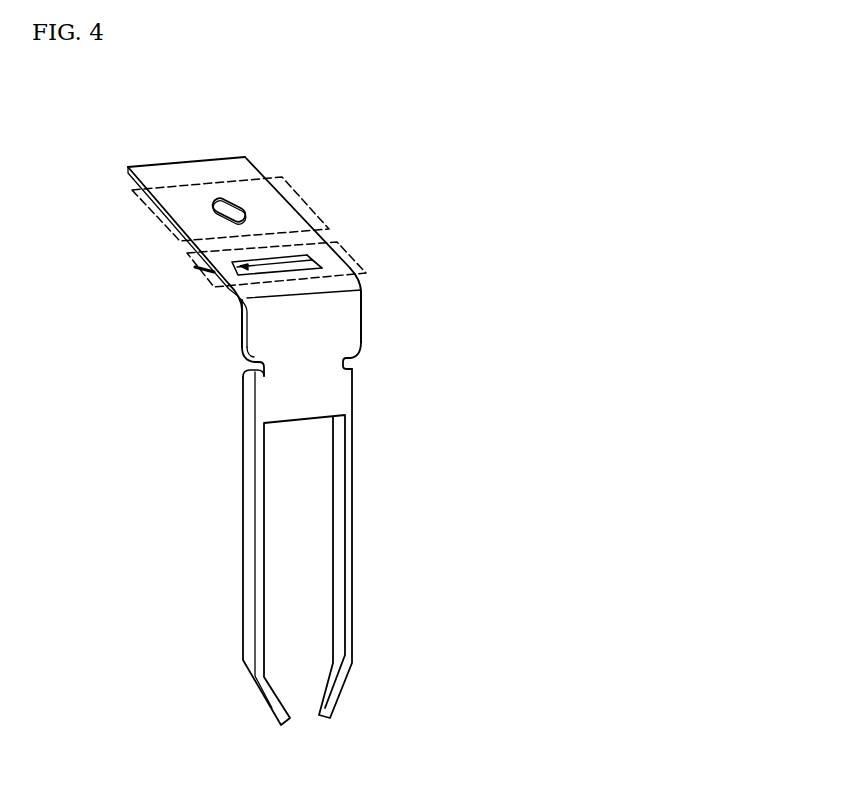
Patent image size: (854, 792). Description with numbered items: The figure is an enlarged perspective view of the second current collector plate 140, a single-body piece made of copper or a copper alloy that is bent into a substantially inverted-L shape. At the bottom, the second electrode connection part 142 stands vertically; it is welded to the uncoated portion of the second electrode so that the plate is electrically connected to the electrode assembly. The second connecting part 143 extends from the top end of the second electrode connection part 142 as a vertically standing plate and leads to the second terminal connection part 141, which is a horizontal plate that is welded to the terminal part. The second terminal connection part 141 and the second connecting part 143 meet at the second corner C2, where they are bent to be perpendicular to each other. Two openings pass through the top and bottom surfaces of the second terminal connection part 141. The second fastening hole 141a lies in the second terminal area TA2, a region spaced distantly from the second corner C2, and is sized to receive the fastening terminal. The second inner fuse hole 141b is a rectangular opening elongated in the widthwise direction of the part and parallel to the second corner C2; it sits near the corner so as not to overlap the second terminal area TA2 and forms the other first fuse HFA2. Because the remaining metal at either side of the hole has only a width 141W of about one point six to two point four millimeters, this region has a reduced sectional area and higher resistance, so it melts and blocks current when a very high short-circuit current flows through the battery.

The second current collector plate 140 is at (467, 147).
The second terminal connection part 141 is at (235, 165).
The second fastening hole 141a is at (215, 197).
The second inner fuse hole 141b is at (311, 257).
The width 141W is at (227, 285).
The second terminal area TA2 is at (145, 211).
The other first fuse HFA2 is at (352, 250).
The second corner C2 is at (355, 300).
The second connecting part 143 is at (352, 331).
The second electrode connection part 142 is at (258, 596).